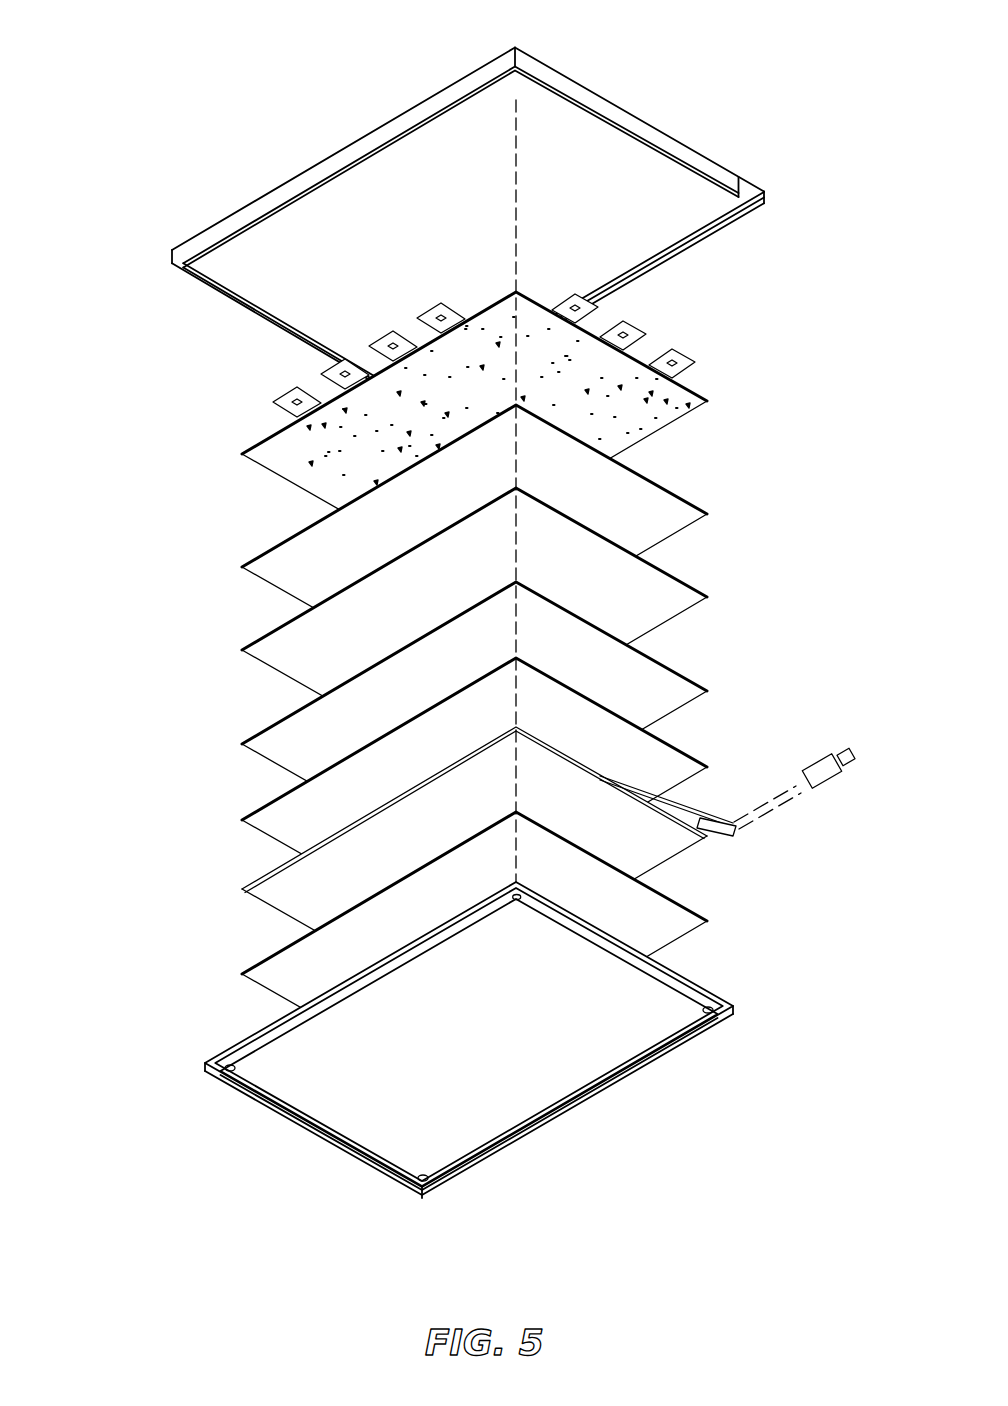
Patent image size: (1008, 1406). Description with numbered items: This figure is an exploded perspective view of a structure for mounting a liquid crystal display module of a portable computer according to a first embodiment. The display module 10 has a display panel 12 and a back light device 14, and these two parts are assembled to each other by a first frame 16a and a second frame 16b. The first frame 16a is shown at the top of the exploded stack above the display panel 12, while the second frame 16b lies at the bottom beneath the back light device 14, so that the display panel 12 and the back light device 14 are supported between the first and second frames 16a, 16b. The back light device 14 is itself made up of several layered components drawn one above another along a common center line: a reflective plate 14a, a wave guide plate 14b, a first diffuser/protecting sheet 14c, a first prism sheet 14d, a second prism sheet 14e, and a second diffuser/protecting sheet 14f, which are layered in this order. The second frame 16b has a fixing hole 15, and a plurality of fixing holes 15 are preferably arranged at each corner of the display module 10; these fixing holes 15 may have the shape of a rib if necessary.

The display module 10 is at (840, 212).
The display panel 12 is at (682, 406).
The back light device 14 is at (445, 744).
The reflective plate 14a is at (288, 549).
The wave guide plate 14b is at (276, 648).
The first diffuser/protecting sheet 14c is at (281, 733).
The first prism sheet 14d is at (276, 810).
The second prism sheet 14e is at (276, 880).
The second diffuser/protecting sheet 14f is at (421, 947).
The fixing hole 15 is at (230, 1074).
The first frame 16a is at (627, 118).
The second frame 16b is at (490, 1067).